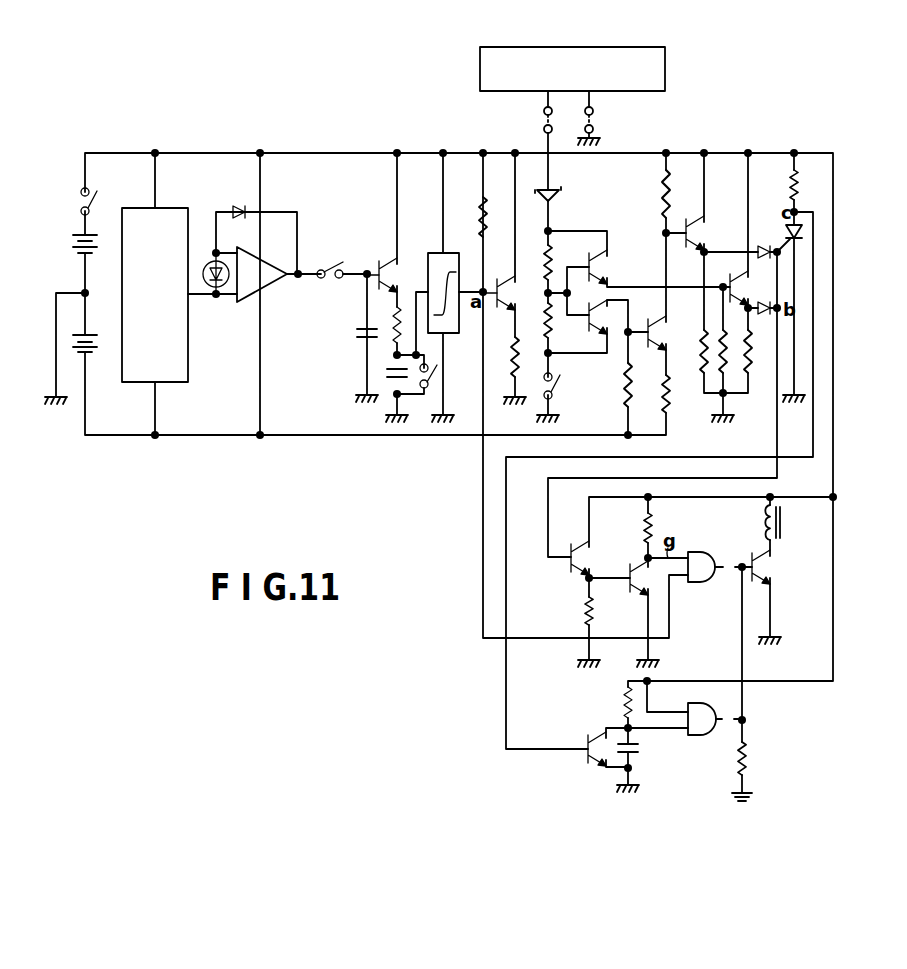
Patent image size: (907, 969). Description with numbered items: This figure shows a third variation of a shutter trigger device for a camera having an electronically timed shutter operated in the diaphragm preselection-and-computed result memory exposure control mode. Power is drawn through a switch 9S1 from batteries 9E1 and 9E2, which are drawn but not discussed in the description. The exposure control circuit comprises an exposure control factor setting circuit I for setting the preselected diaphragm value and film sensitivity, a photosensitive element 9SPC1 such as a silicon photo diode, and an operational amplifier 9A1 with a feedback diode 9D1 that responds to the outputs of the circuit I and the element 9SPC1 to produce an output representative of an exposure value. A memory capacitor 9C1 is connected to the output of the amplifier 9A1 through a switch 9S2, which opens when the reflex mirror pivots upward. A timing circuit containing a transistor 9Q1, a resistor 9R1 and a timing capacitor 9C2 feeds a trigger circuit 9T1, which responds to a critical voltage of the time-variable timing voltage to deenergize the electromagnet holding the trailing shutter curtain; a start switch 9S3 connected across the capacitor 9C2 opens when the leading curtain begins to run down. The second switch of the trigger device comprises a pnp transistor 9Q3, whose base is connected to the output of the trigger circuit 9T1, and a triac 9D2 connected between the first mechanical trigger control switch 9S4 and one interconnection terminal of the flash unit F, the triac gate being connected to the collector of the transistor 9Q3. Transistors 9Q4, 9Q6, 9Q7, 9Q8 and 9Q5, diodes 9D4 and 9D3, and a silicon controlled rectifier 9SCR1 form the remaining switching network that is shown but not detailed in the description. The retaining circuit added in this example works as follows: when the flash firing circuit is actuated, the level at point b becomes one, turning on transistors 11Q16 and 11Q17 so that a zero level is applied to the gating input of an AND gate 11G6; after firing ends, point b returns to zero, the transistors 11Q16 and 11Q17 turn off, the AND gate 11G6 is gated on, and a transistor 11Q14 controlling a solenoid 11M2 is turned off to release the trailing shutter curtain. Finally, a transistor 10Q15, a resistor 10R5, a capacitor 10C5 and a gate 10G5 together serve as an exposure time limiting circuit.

The power switch 9S1 is at (106, 201).
The battery 9E1 is at (72, 244).
The battery 9E2 is at (97, 350).
The exposure control factor setting circuit I is at (163, 220).
The feedback diode 9D1 is at (246, 202).
The photosensitive element 9SPC1 is at (226, 288).
The operational amplifier 9A1 is at (262, 274).
The switch 9S2 is at (337, 285).
The transistor 9Q1 is at (397, 275).
The resistor 9R1 is at (393, 321).
The memory capacitor 9C1 is at (362, 334).
The timing capacitor 9C2 is at (388, 376).
The start switch 9S3 is at (439, 395).
The trigger circuit 9T1 is at (454, 280).
The pnp transistor 9Q3 is at (513, 293).
The triac 9D2 is at (568, 198).
The first mechanical trigger control switch 9S4 is at (568, 388).
The transistor 9Q4 is at (612, 268).
The transistor 9Q6 is at (612, 318).
The transistor 9Q7 is at (673, 333).
The transistor 9Q8 is at (709, 234).
The diode 9D4 is at (767, 242).
The transistor 9Q5 is at (756, 289).
The diode 9D3 is at (769, 318).
The silicon controlled rectifier 9SCR1 is at (800, 236).
The flash unit F is at (665, 70).
The transistor 11Q16 is at (607, 558).
The transistor 11Q17 is at (628, 585).
The AND gate 11G6 is at (702, 552).
The solenoid 11M2 is at (803, 523).
The transistor 11Q14 is at (794, 567).
The resistor 10R5 is at (614, 702).
The transistor 10Q15 is at (577, 746).
The capacitor 10C5 is at (653, 751).
The gate 10G5 is at (700, 735).